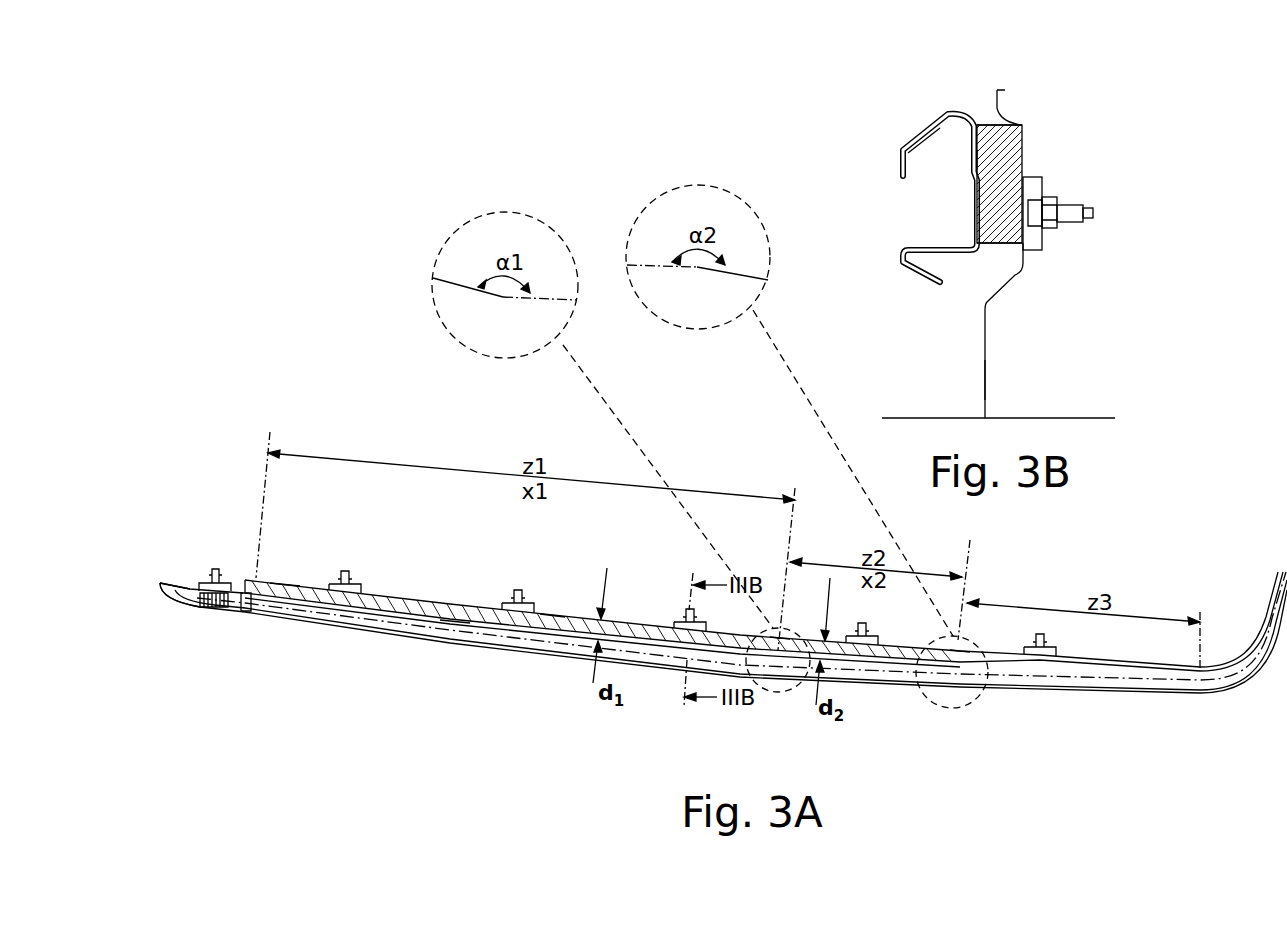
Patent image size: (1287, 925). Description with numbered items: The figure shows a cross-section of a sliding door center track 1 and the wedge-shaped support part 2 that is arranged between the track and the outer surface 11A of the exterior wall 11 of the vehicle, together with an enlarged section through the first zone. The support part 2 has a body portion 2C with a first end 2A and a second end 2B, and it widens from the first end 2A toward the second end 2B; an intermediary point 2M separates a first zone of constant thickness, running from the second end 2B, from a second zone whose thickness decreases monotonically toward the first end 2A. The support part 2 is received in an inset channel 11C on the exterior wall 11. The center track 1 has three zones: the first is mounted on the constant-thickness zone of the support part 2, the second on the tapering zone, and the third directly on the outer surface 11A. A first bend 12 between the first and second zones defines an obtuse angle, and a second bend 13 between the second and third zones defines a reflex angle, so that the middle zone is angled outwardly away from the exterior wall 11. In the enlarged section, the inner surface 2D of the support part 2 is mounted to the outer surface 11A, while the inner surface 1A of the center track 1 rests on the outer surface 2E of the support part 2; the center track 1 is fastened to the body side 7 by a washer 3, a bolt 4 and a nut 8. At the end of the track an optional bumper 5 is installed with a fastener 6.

In FIG. 3A, the center track 1 is at (407, 640).
In FIG. 3B, the center track 1 is at (922, 125).
In FIG. 3B, the inner surface of the center track 1A is at (982, 158).
In FIG. 3A, the support part 2 is at (417, 596).
In FIG. 3B, the support part 2 is at (995, 125).
In FIG. 3A, the first end of the support part 2A is at (972, 643).
In FIG. 3A, the second end of the support part 2B is at (244, 587).
In FIG. 3A, the body portion of the support part 2C is at (455, 622).
In FIG. 3B, the inner surface of the support part 2D is at (1010, 230).
In FIG. 3B, the outer surface of the support part 2E is at (977, 180).
In FIG. 3A, the intermediary point of the support part 2M is at (783, 642).
In FIG. 3A, the washer 3 is at (387, 590).
In FIG. 3B, the washer 3 is at (1030, 185).
In FIG. 3A, the bolt 4 is at (347, 573).
In FIG. 3B, the bolt 4 is at (1095, 213).
In FIG. 3A, the bumper 5 is at (177, 582).
In FIG. 3A, the fastener 6 is at (220, 570).
In FIG. 3A, the body side of the vehicle 7 is at (282, 587).
In FIG. 3B, the body side of the vehicle 7 is at (1010, 100).
In FIG. 3B, the nut 8 is at (1050, 198).
In FIG. 3B, the exterior wall of the vehicle 11 is at (965, 346).
In FIG. 3B, the outer surface of the exterior wall 11A is at (985, 373).
In FIG. 3A, the inset channel 11C is at (552, 618).
In FIG. 3A, the first bend of the center track 12 is at (770, 692).
In FIG. 3A, the second bend of the center track 13 is at (935, 710).